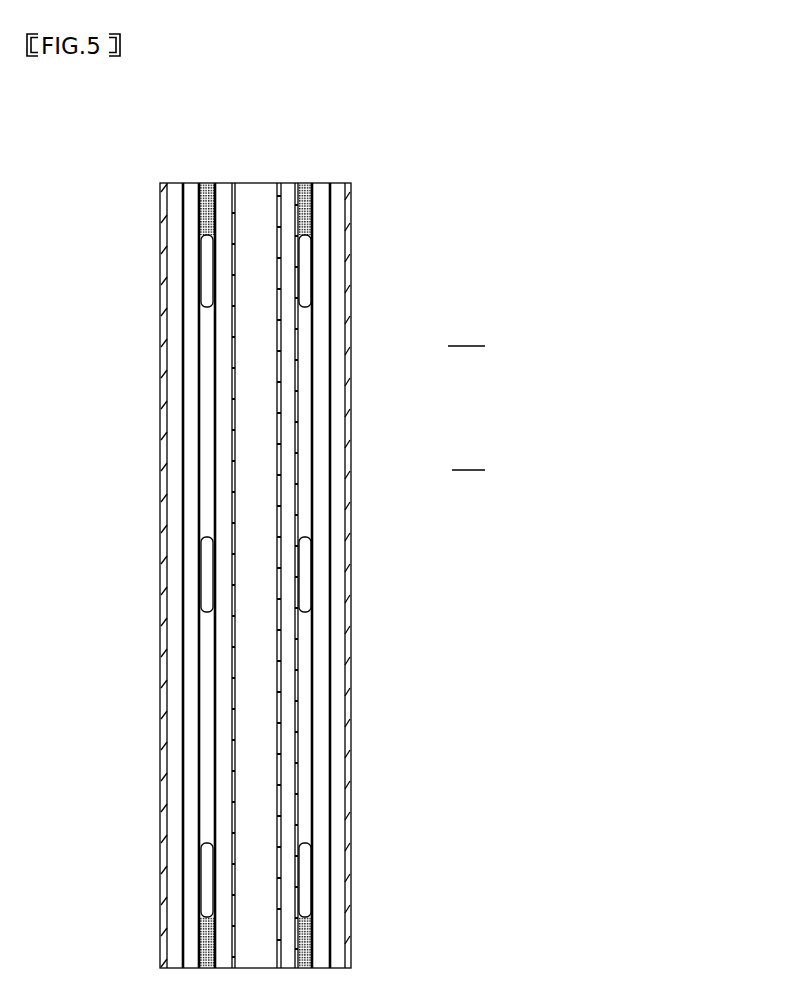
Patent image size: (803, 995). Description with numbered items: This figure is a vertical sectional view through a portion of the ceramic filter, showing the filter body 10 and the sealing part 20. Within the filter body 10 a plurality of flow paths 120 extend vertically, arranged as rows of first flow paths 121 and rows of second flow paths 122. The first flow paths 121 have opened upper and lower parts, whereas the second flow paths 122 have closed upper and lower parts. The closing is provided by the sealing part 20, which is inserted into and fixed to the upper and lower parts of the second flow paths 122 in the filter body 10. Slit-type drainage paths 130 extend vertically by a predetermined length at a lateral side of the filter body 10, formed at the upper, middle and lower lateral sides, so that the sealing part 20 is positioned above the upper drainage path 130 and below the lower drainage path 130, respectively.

The filter body 10 is at (350, 403).
The sealing part 20 is at (208, 183).
The flow paths 120 is at (491, 408).
The first flow paths 121 is at (324, 452).
The second flow paths 122 is at (305, 341).
The drainage path 130 is at (305, 268).